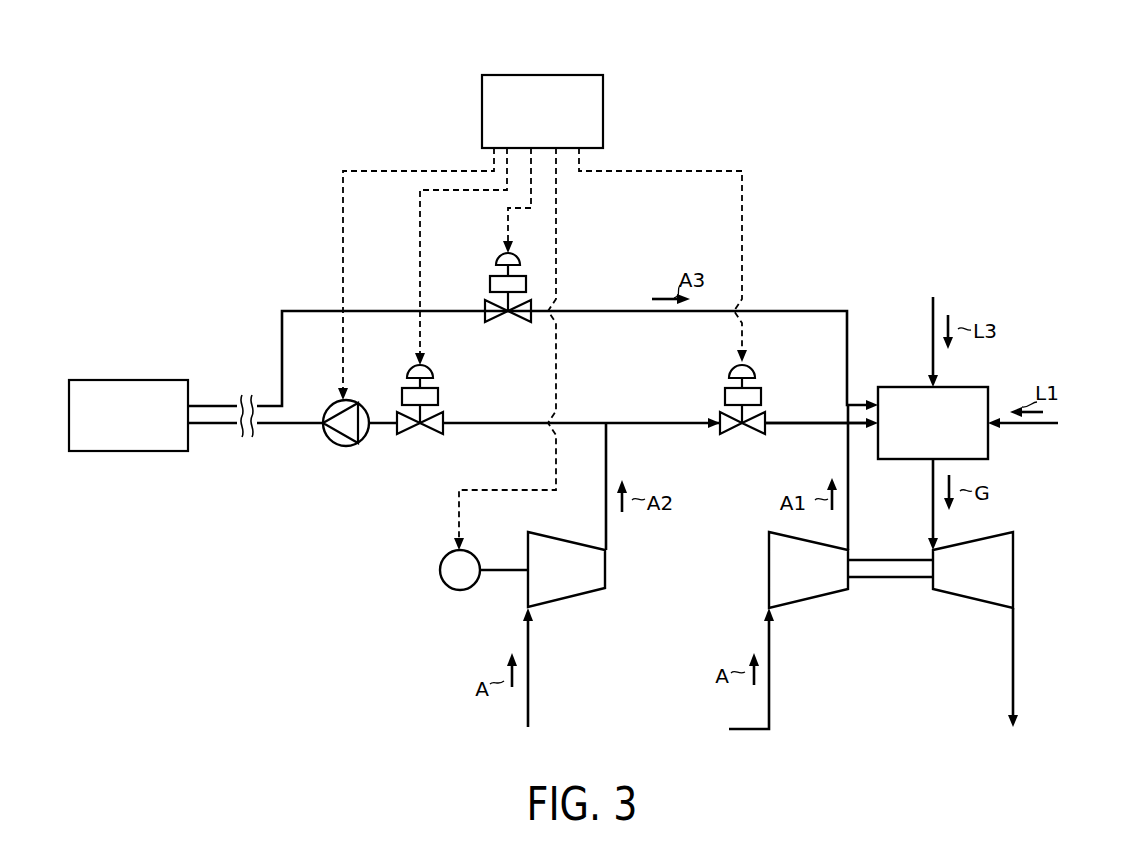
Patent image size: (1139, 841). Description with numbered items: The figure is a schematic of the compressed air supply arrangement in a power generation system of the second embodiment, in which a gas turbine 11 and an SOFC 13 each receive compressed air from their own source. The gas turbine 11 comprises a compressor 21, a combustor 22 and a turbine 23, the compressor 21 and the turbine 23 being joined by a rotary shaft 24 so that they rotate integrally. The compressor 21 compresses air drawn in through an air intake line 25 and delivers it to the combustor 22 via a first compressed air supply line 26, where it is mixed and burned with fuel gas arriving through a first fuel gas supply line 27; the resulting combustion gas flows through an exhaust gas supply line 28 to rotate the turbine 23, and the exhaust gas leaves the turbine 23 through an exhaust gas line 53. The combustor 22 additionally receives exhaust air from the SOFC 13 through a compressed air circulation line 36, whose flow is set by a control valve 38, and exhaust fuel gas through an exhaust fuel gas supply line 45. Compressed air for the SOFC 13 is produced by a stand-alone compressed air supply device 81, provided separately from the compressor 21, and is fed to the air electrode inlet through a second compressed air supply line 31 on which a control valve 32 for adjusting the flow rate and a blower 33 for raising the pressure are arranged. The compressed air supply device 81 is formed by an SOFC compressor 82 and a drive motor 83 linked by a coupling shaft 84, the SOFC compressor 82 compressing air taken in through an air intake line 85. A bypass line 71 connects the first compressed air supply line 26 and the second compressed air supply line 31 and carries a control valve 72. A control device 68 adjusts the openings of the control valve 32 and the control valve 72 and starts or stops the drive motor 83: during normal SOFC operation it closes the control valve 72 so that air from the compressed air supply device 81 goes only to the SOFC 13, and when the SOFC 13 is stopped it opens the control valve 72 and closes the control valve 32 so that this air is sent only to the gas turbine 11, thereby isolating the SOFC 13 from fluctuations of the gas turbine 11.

The gas turbine 11 is at (931, 581).
The SOFC 13 is at (128, 402).
The compressor 21 is at (808, 596).
The combustor 22 is at (933, 410).
The turbine 23 is at (973, 596).
The rotary shaft 24 is at (890, 595).
The air intake line 25 is at (758, 674).
The first compressed air supply line 26 is at (873, 477).
The first fuel gas supply line 27 is at (1054, 439).
The exhaust gas supply line 28 is at (909, 504).
The second compressed air supply line 31 is at (533, 402).
The control valve 32 is at (432, 386).
The blower 33 is at (336, 403).
The compressed air circulation line 36 is at (533, 350).
The control valve 38 is at (519, 274).
The exhaust fuel gas supply line 45 is at (927, 325).
The exhaust gas line 53 is at (1021, 696).
The control device 68 is at (542, 300).
The bypass line 71 is at (815, 400).
The control valve 72 is at (754, 386).
The compressed air supply device 81 is at (507, 596).
The SOFC compressor 82 is at (567, 542).
The drive motor 83 is at (448, 550).
The coupling shaft 84 is at (504, 600).
The air intake line 85 is at (550, 684).